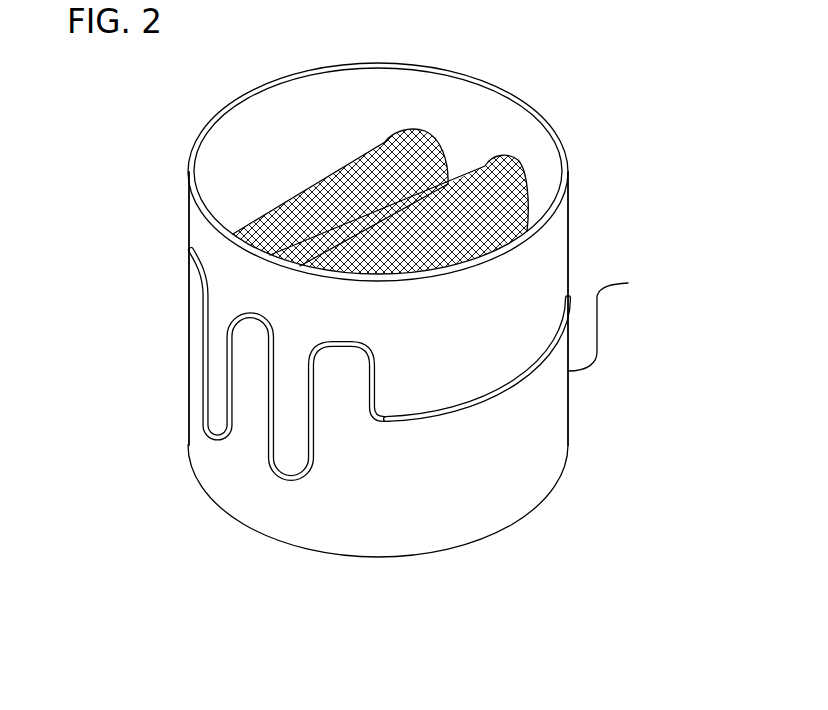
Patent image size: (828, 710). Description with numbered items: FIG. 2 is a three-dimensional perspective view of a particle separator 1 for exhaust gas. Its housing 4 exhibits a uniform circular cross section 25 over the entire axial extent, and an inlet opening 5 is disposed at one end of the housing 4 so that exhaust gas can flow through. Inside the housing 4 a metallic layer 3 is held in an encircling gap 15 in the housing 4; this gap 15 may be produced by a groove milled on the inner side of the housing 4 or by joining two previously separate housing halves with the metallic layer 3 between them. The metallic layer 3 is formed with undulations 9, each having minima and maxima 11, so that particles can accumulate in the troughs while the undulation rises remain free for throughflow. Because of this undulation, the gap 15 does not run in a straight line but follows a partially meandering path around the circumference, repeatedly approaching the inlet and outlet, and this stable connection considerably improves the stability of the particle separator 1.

The particle separator 1 is at (586, 88).
The metallic layer 3 is at (503, 237).
The housing 4 is at (197, 235).
The inlet opening 5 is at (323, 63).
The undulation 9 is at (517, 187).
The maximum 11 is at (408, 137).
The gap 15 is at (503, 390).
The circular cross section 25 is at (253, 153).